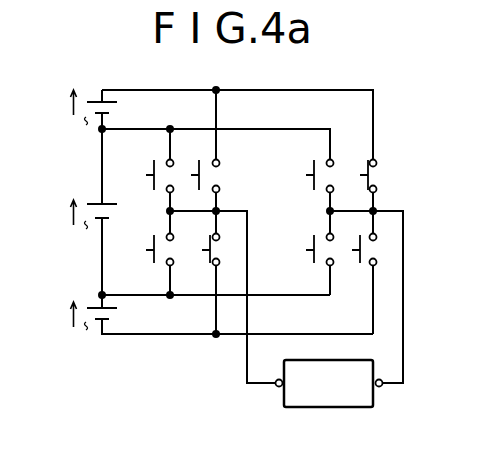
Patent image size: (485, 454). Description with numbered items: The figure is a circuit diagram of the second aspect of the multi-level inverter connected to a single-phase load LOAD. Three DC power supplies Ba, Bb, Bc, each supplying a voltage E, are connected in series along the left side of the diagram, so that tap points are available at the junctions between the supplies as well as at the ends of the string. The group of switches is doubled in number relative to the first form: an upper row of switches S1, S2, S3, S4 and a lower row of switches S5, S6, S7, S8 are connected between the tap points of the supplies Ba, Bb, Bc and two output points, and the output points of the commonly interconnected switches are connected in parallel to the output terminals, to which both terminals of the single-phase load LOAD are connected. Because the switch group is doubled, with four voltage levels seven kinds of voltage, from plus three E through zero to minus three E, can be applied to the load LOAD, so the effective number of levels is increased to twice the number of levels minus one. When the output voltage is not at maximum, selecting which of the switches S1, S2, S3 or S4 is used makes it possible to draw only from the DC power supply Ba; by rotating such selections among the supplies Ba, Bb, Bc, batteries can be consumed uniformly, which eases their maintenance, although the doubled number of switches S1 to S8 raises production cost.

The voltage level E is at (66, 208).
The DC power supply Ba is at (87, 126).
The DC power supply Bb is at (87, 230).
The DC power supply Bc is at (90, 337).
The switch S1 is at (149, 181).
The switch S2 is at (201, 174).
The switch S3 is at (315, 174).
The switch S4 is at (357, 174).
The switch S5 is at (153, 253).
The switch S6 is at (204, 272).
The switch S7 is at (313, 253).
The switch S8 is at (359, 272).
The single-phase load LOAD is at (329, 383).